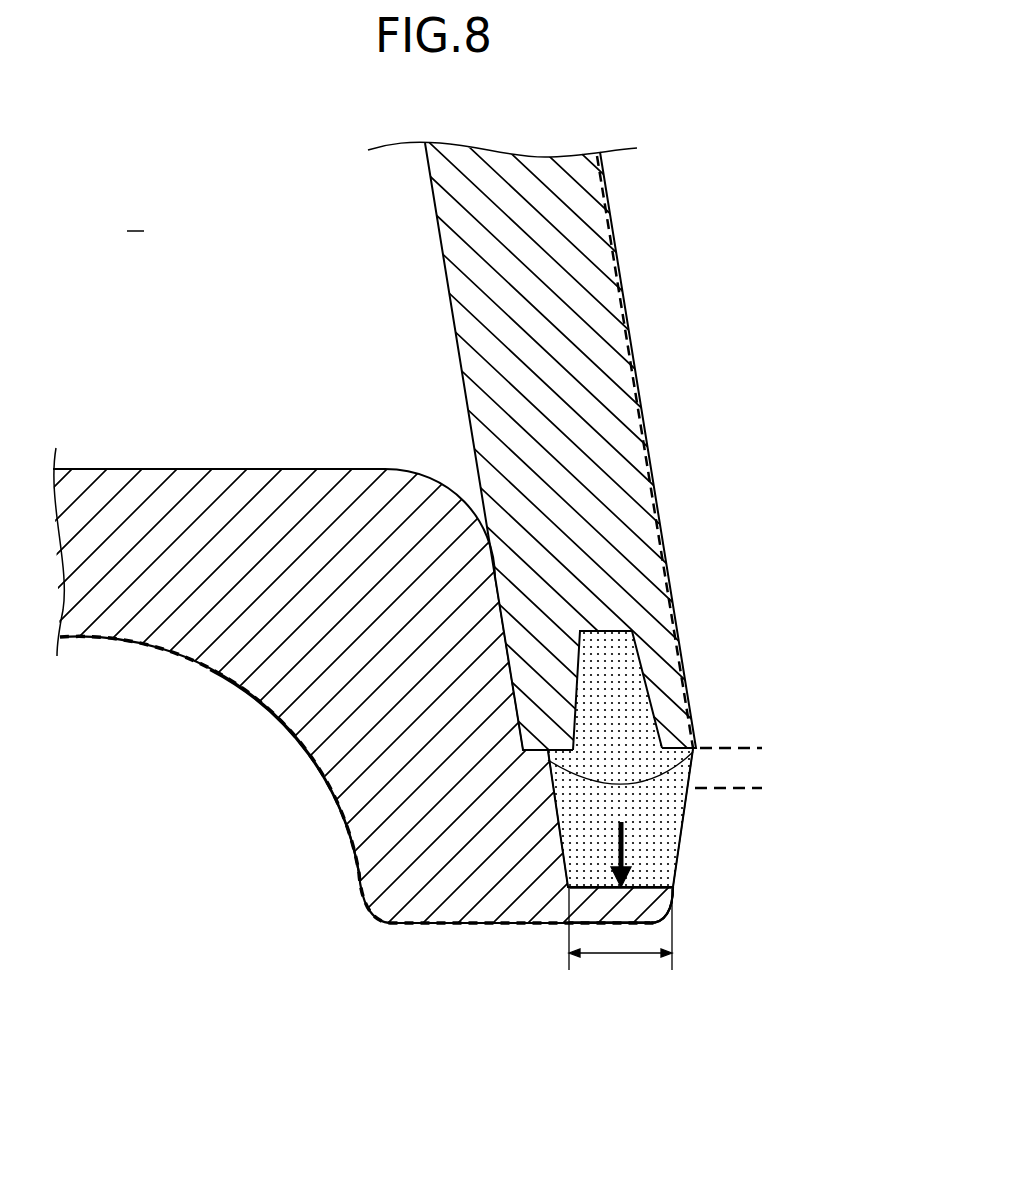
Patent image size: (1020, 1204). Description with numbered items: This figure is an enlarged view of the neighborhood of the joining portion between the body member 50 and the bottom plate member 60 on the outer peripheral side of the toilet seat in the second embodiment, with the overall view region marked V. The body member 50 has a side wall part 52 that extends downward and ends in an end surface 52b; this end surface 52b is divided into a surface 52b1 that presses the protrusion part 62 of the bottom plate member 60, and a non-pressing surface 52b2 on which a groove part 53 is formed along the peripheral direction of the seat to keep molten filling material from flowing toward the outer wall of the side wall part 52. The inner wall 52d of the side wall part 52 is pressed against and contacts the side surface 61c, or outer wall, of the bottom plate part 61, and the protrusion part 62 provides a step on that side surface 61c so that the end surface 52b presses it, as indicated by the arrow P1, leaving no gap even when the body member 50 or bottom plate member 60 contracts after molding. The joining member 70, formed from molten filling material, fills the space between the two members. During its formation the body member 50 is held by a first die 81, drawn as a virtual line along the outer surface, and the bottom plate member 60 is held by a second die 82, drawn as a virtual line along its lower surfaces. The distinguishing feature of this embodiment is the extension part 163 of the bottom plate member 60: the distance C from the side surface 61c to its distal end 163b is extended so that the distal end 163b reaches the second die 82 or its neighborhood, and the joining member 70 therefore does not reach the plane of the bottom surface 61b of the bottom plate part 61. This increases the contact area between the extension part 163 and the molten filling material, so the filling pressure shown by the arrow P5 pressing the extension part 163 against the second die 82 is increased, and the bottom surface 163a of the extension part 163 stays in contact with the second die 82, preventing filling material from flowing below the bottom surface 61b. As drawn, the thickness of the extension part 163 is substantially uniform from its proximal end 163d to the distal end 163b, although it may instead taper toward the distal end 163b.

The vehicle V is at (136, 219).
The body member 50 is at (609, 500).
The side wall part 52 is at (609, 500).
The end surface 52b is at (774, 777).
The surface 52b1 is at (682, 786).
The non-pressing surface 52b2 is at (690, 750).
The inner wall 52d is at (492, 578).
The groove part 53 is at (640, 656).
The bottom plate member 60 is at (510, 726).
The bottom plate part 61 is at (510, 740).
The bottom surface 61b is at (407, 925).
The side surface 61c is at (503, 650).
The protrusion part 62 is at (542, 795).
The joining member 70 is at (667, 827).
The first die 81 is at (651, 450).
The second die 82 is at (346, 832).
The extension part 163 is at (618, 971).
The bottom surface 163a is at (593, 900).
The distal end 163b is at (673, 902).
The proximal end 163d is at (600, 924).
The arrow P1 is at (762, 482).
The arrow P5 is at (628, 838).
The distance c C is at (620, 937).